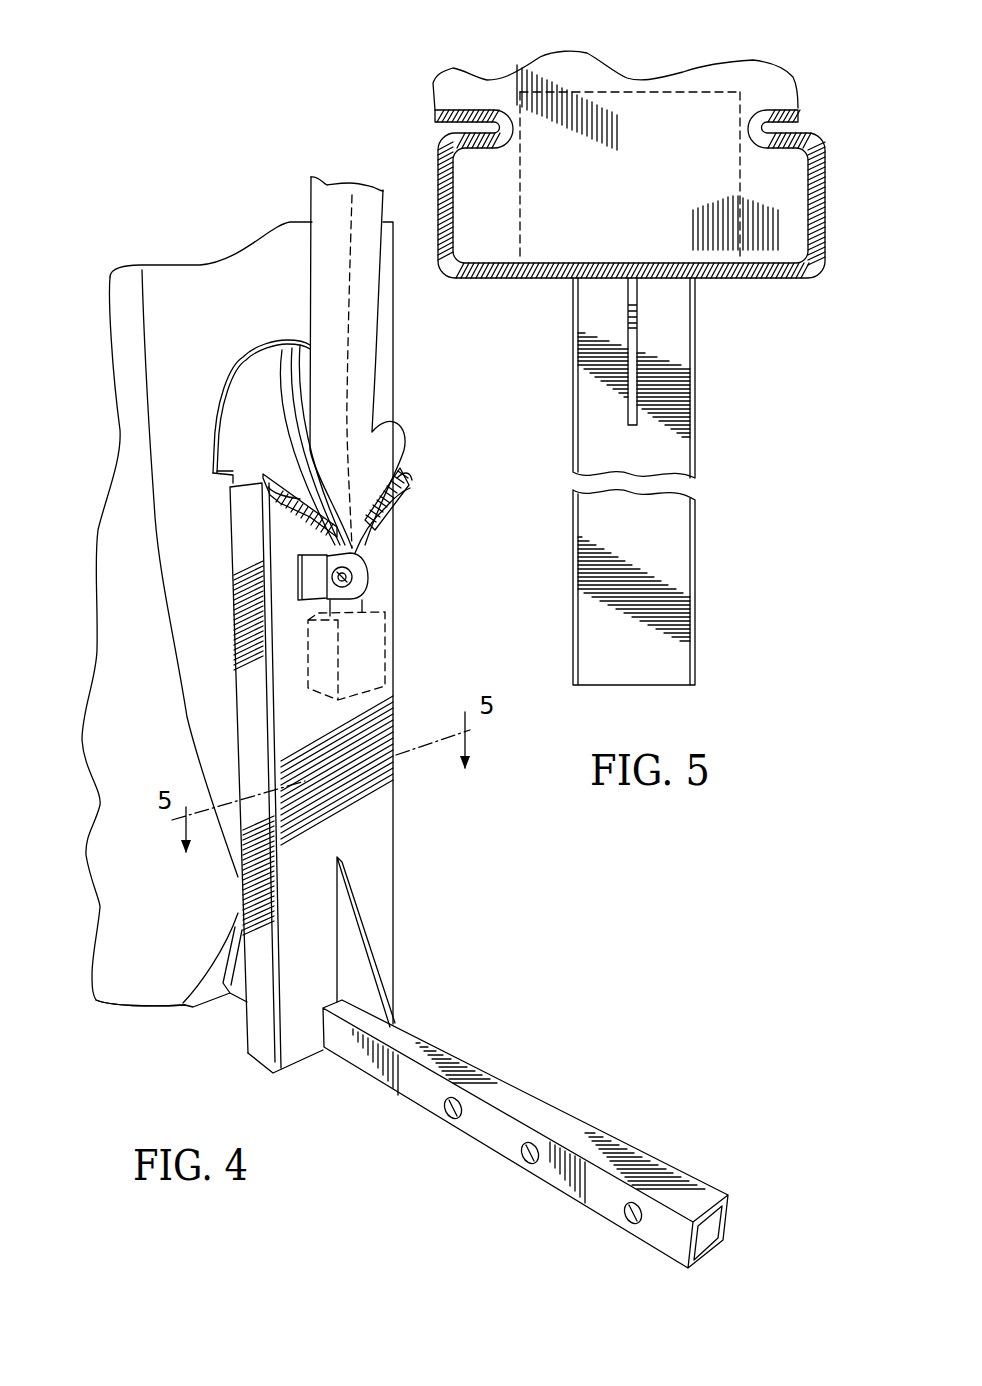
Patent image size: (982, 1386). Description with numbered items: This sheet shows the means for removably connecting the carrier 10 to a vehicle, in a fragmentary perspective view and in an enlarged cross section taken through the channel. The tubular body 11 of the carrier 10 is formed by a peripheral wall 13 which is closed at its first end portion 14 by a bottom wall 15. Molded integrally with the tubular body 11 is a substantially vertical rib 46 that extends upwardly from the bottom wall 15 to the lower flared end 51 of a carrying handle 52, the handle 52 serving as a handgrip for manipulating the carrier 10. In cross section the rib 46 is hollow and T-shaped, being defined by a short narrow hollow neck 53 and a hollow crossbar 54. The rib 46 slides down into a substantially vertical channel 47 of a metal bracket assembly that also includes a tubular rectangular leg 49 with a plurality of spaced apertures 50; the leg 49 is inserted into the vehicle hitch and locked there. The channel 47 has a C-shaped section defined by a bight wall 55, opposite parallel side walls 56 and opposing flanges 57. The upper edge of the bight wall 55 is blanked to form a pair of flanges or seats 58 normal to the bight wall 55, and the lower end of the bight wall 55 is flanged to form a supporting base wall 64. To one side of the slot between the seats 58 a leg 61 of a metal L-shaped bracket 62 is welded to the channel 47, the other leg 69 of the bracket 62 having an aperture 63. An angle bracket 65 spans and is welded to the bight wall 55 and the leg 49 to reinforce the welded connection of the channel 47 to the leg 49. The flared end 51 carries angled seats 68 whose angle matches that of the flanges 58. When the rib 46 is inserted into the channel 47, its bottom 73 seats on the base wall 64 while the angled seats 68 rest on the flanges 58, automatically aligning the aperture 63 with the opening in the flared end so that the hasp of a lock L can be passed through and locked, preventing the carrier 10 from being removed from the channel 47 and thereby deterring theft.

In FIG. 4, the carrier 10 is at (155, 236).
In FIG. 4, the tubular body 11 is at (115, 480).
In FIG. 5, the tubular body 11 is at (780, 57).
In FIG. 4, the peripheral wall 13 is at (127, 698).
In FIG. 4, the first end portion 14 is at (140, 965).
In FIG. 4, the bottom wall 15 is at (153, 1010).
In FIG. 5, the rib 46 is at (777, 197).
In FIG. 4, the channel 47 is at (402, 870).
In FIG. 4, the tubular rectangular leg 49 is at (537, 1112).
In FIG. 5, the tubular rectangular leg 49 is at (668, 360).
In FIG. 4, the apertures 50 is at (443, 1118).
In FIG. 4, the lower flared end 51 is at (250, 372).
In FIG. 4, the carrying handle 52 is at (325, 200).
In FIG. 5, the neck 53 is at (740, 130).
In FIG. 5, the crossbar 54 is at (463, 222).
In FIG. 4, the bight wall 55 is at (355, 847).
In FIG. 5, the bight wall 55 is at (762, 282).
In FIG. 4, the side walls 56 is at (245, 715).
In FIG. 5, the side walls 56 is at (443, 217).
In FIG. 5, the flanges 57 is at (487, 107).
In FIG. 4, the flanges or seats 58 is at (260, 523).
In FIG. 4, the leg of L-shaped bracket 61 is at (310, 568).
In FIG. 4, the L-shaped bracket 62 is at (293, 598).
In FIG. 4, the aperture 63 is at (355, 578).
In FIG. 5, the base wall 64 is at (647, 115).
In FIG. 4, the angle bracket 65 is at (353, 963).
In FIG. 5, the angle bracket 65 is at (632, 348).
In FIG. 4, the angled seats 68 is at (270, 488).
In FIG. 4, the leg of bracket 69 is at (368, 548).
In FIG. 5, the bottom of rib 73 is at (700, 110).
In FIG. 4, the lock L is at (360, 653).